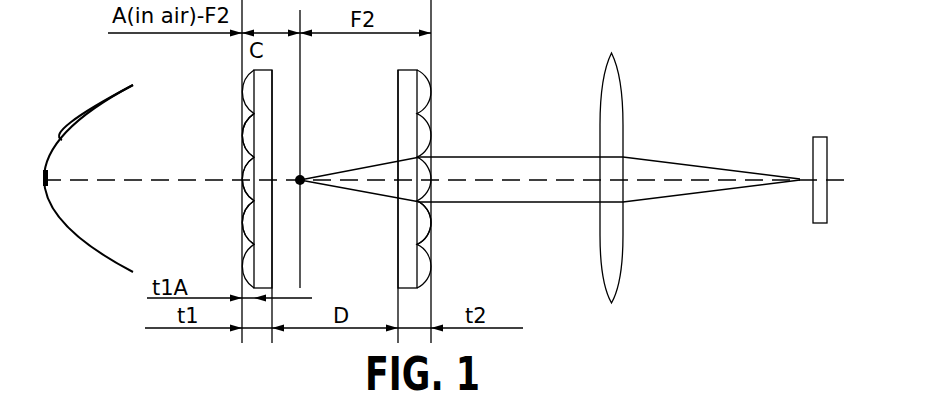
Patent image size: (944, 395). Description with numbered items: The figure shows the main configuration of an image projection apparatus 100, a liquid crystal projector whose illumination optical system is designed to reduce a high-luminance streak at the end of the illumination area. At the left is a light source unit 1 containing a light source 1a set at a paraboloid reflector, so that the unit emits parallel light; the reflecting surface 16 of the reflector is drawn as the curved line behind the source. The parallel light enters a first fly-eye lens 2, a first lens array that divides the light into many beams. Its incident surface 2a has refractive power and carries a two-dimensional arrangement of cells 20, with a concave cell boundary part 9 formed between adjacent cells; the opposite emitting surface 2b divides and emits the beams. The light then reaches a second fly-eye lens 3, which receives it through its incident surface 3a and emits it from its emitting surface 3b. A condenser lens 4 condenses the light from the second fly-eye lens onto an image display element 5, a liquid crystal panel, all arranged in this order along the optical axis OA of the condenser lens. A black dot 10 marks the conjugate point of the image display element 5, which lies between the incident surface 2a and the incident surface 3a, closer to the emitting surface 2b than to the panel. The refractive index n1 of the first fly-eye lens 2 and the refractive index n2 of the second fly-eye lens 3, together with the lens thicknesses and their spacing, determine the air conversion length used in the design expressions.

The light source unit 1 is at (93, 252).
The light source 1a is at (45, 188).
The first fly-eye lens 2 is at (247, 176).
The incident surface 2a is at (242, 83).
The emitting surface 2b is at (272, 91).
The second fly-eye lens 3 is at (423, 181).
The incident surface 3a is at (398, 95).
The emitting surface 3b is at (431, 88).
The condenser lens 4 is at (604, 277).
The image display element 5 is at (813, 212).
The cell boundary part 9 is at (242, 193).
The black dot 10 is at (302, 176).
The reflecting surface 16 is at (100, 107).
The cells 20 is at (242, 157).
The image projection apparatus 100 is at (812, 51).
The refractive index of the first fly-eye lens n1 is at (242, 222).
The refractive index of the second fly-eye lens n2 is at (408, 222).
The optical axis OA is at (690, 181).